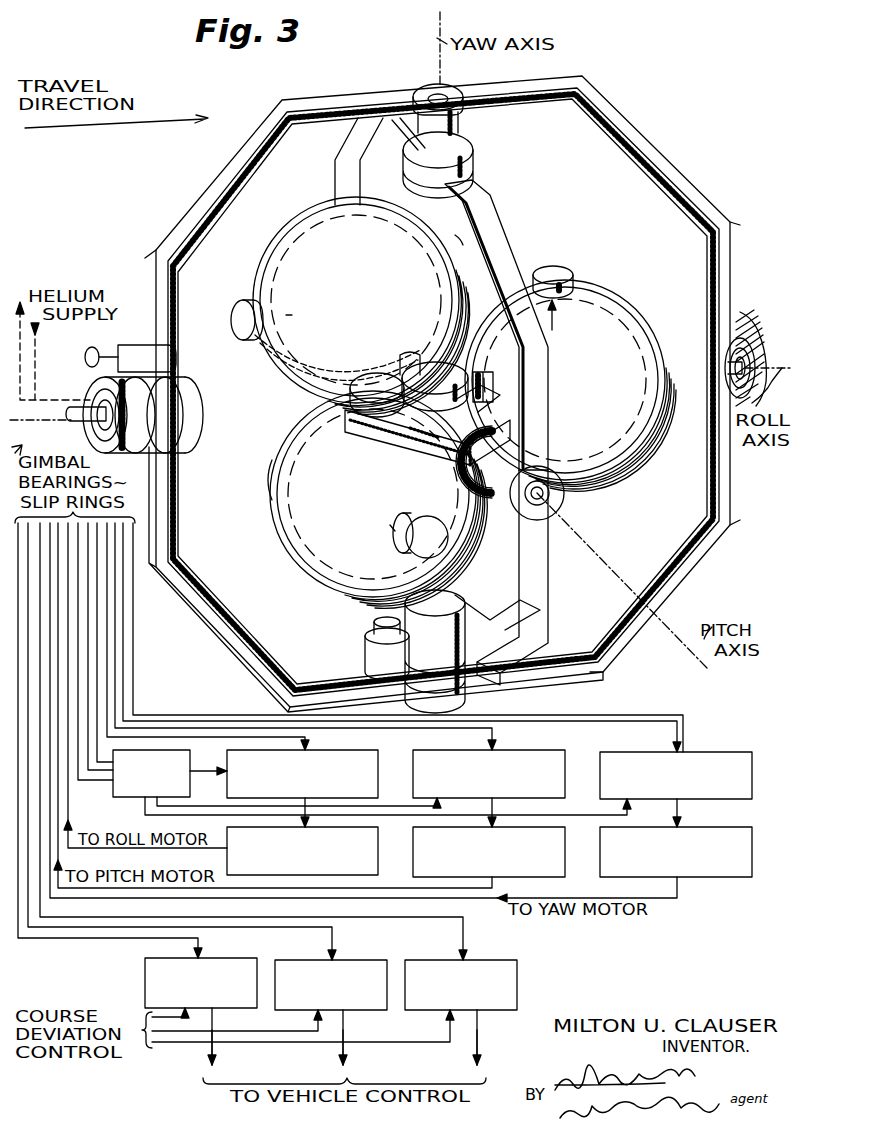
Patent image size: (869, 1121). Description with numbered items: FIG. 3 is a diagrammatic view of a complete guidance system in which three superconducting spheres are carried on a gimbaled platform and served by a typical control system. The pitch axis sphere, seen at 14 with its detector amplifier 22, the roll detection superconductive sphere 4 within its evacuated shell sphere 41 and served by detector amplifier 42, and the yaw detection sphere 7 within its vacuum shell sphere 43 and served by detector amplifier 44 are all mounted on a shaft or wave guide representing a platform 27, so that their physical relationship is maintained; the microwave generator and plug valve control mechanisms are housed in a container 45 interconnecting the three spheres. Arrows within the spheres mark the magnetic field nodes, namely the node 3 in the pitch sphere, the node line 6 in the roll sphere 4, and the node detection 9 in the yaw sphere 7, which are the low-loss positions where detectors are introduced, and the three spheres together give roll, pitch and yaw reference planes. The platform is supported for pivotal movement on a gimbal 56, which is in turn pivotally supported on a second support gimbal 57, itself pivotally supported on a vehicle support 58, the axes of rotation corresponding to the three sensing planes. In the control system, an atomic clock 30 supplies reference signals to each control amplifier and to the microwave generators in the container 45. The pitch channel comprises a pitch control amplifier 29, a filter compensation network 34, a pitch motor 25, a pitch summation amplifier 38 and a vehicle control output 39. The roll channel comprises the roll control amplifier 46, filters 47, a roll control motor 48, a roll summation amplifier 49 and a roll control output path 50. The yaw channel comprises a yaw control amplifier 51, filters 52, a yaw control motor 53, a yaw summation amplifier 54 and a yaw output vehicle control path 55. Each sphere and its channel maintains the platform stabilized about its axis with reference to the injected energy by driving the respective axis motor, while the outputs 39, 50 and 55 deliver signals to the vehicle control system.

The magnetic field node 3 is at (558, 317).
The roll detection superconductive sphere 4 is at (322, 478).
The magnetic field node line 6 is at (384, 523).
The yaw detection sphere 7 is at (390, 263).
The magnetic field node detection 9 is at (273, 319).
The gyroscope 14 is at (608, 302).
The detector amplifier 22 is at (552, 266).
The pitch motor 25 is at (552, 428).
The platform 27 is at (382, 442).
The pitch control amplifier 29 is at (562, 759).
The atomic clock 30 is at (188, 759).
The filter compensation network 34 is at (562, 839).
The pitch summation amplifier 38 is at (348, 959).
The vehicle control output 39 is at (346, 1066).
The evacuated shell sphere 41 is at (278, 442).
The detector amplifier 42 is at (420, 535).
The vacuum shell sphere 43 is at (455, 228).
The detector amplifier 44 is at (232, 320).
The container 45 is at (448, 389).
The roll control amplifier 46 is at (375, 759).
The filters 47 is at (375, 839).
The roll control motor 48 is at (142, 340).
The roll summation amplifier 49 is at (220, 959).
The roll control output path 50 is at (214, 1066).
The yaw control amplifier 51 is at (749, 760).
The filters 52 is at (749, 839).
The yaw control motor 53 is at (370, 652).
The yaw summation amplifier 54 is at (482, 959).
The yaw output vehicle control path 55 is at (478, 1064).
The gimbal 56 is at (547, 588).
The second support gimbal 57 is at (633, 138).
The vehicle support 58 is at (744, 312).